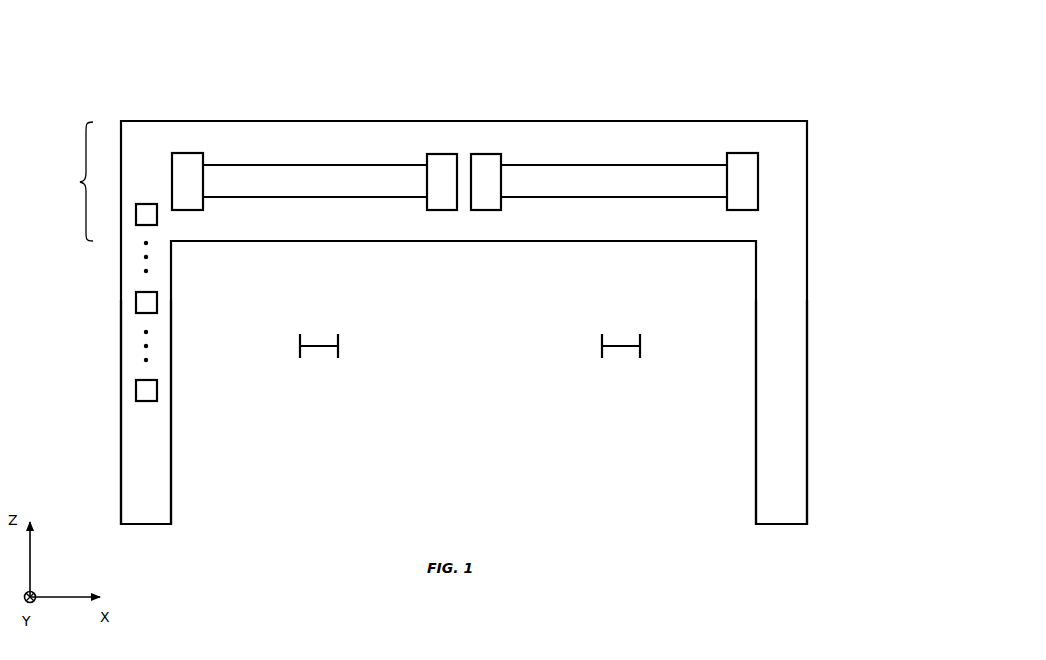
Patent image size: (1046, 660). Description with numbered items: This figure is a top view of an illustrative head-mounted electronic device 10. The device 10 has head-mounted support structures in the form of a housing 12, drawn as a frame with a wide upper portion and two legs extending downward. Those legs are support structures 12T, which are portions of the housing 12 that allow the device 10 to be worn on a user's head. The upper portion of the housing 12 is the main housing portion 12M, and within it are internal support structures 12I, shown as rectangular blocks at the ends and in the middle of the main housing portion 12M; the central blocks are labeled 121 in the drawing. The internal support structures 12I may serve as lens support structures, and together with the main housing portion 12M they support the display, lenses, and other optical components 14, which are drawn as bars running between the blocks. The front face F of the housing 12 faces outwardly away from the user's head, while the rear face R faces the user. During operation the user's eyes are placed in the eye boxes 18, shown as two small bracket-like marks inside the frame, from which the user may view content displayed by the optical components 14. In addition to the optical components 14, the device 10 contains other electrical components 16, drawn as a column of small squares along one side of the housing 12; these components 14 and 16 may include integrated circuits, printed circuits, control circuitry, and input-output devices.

The electronic device 10 is at (874, 66).
The housing 12 is at (808, 182).
The internal support structures 12I is at (188, 152).
The main housing portion 12M is at (65, 181).
The support structures 12T is at (136, 473).
The central interface portions 121 is at (485, 153).
The optical components 14 is at (305, 164).
The electrical components 16 is at (135, 390).
The eye boxes 18 is at (316, 350).
The front face F is at (146, 90).
The rear face R is at (193, 262).